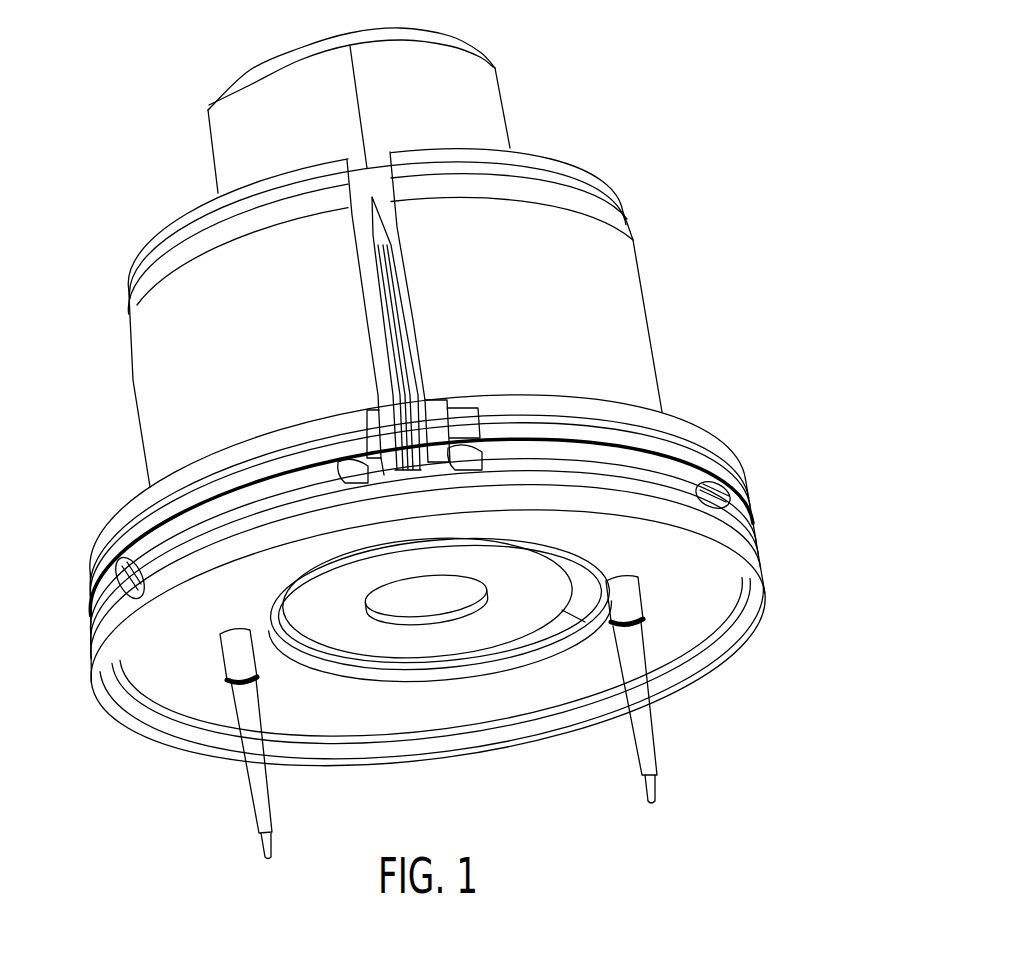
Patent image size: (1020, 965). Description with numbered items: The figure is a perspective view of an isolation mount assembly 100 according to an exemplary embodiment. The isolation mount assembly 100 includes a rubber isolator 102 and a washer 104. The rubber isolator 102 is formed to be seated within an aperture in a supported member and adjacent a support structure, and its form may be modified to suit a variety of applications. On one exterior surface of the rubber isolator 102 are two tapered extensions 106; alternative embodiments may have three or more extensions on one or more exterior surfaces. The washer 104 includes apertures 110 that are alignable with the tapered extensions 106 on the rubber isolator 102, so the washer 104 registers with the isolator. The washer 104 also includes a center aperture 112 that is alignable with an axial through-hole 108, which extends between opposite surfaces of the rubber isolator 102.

The isolation mount assembly 100 is at (683, 66).
The rubber isolator 102 is at (167, 343).
The washer 104 is at (715, 587).
The tapered extensions 106 is at (262, 808).
The axial through-hole 108 is at (403, 597).
The apertures 110 is at (223, 633).
The center aperture 112 is at (456, 612).